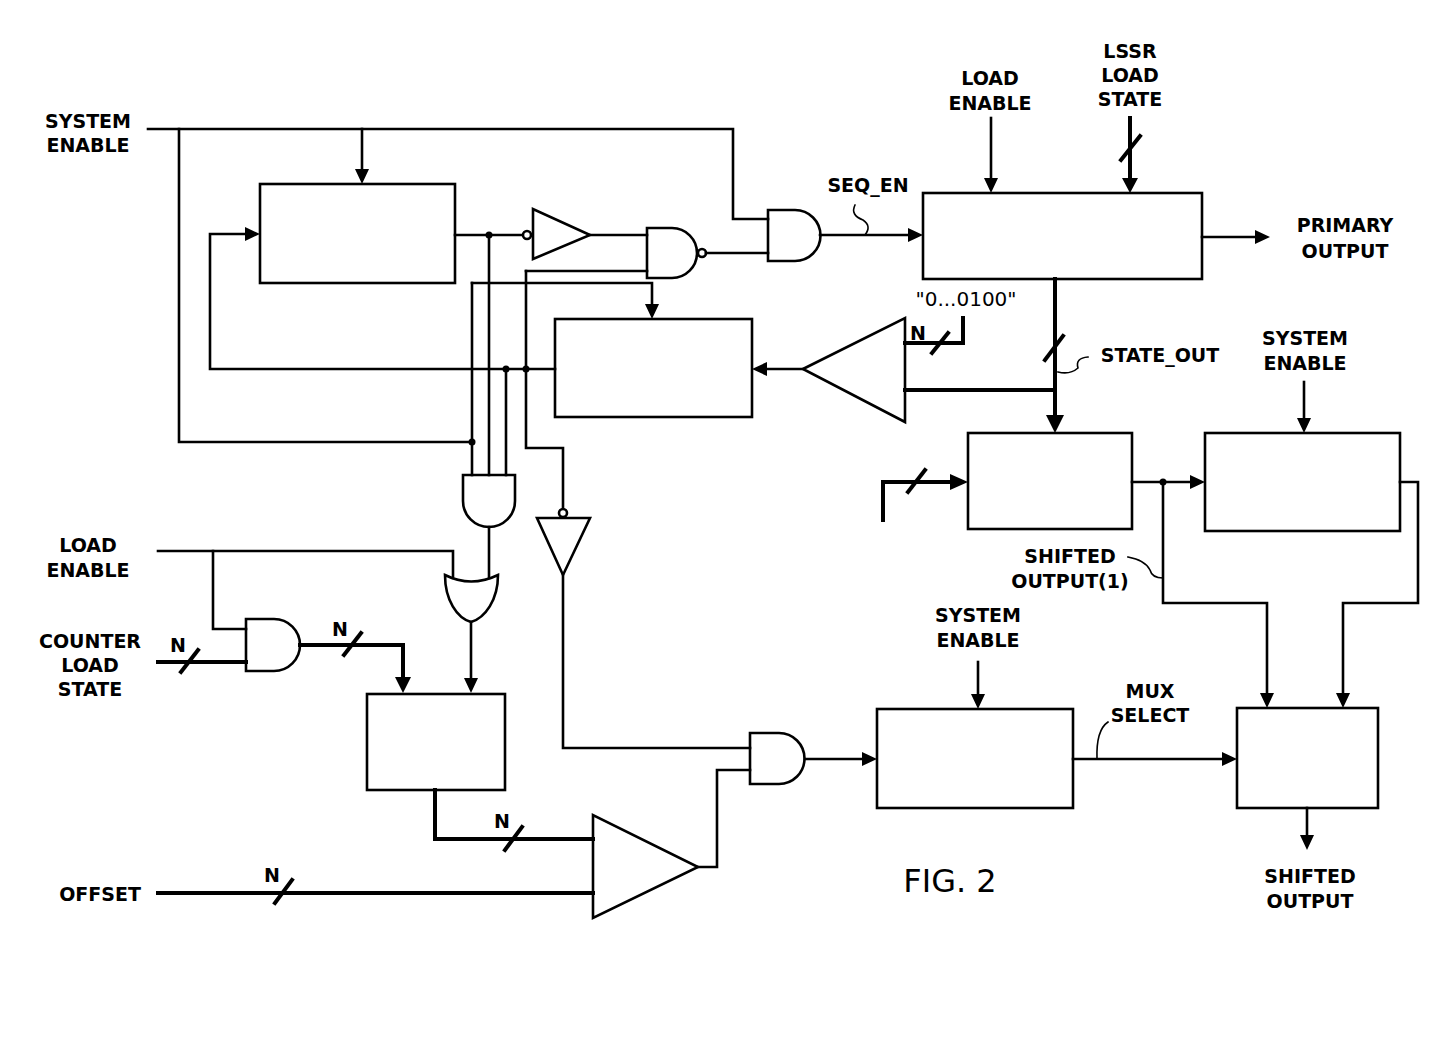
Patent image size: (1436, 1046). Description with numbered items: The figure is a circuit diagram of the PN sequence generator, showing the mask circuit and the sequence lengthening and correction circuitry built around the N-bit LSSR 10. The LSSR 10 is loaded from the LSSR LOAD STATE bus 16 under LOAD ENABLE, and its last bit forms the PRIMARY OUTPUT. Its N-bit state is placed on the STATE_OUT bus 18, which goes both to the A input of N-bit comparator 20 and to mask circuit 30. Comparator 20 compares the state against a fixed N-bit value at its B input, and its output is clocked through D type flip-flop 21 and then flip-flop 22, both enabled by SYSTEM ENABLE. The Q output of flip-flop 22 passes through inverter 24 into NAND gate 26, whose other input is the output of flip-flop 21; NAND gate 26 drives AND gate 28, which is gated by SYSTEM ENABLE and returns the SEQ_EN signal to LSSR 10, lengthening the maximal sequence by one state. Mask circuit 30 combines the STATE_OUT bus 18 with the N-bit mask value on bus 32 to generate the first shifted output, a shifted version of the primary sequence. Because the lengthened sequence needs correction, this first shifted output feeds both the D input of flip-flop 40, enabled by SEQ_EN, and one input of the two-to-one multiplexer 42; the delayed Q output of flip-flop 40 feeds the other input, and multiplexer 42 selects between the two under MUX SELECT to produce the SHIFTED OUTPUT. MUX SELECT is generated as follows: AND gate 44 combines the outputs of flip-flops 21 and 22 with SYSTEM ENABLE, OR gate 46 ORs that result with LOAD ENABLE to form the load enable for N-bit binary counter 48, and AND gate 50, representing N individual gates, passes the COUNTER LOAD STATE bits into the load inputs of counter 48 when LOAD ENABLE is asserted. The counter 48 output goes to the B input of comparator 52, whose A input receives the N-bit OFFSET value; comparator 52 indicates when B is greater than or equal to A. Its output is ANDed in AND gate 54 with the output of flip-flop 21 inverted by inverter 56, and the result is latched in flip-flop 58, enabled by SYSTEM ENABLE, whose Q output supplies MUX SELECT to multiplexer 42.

The LSSR 10 is at (1195, 193).
The LSSR load state input 16 is at (1137, 152).
The LSSR output state bus 18 is at (1060, 313).
The N-bit comparator 20 is at (833, 343).
The D type flip-flop 21 is at (703, 319).
The D type flip-flop 22 is at (430, 184).
The inverter 24 is at (572, 209).
The NAND gate 26 is at (672, 226).
The AND gate 28 is at (770, 210).
The mask circuit 30 is at (1093, 433).
The mask bus 32 is at (883, 500).
The D-type flip-flop 40 is at (1265, 433).
The 2:1 multiplexer 42 is at (1237, 784).
The AND gate 44 is at (462, 489).
The OR gate 46 is at (447, 594).
The N-bit binary counter 48 is at (367, 735).
The AND gate 50 is at (265, 619).
The N-bit comparator 52 is at (622, 828).
The AND gate 54 is at (765, 733).
The inverter 56 is at (583, 540).
The D-type flip-flop 58 is at (937, 709).